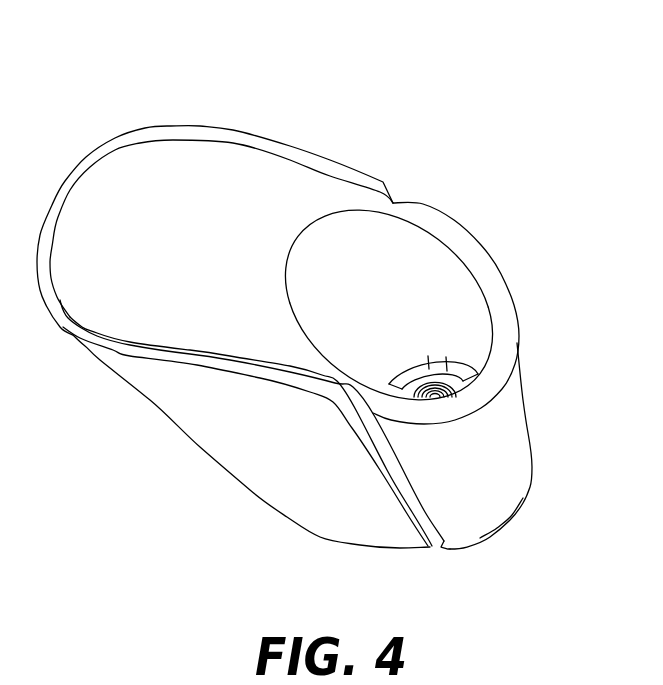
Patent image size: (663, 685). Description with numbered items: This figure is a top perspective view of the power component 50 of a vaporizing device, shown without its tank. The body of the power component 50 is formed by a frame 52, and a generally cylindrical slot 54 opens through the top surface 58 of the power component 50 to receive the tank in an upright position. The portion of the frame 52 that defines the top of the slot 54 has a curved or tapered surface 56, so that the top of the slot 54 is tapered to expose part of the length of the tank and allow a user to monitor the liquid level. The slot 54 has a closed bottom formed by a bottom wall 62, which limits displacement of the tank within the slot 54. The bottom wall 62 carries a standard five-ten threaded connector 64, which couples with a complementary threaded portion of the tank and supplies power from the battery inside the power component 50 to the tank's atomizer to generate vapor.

The power component 50 is at (146, 77).
The frame 52 is at (513, 460).
The slot 54 is at (378, 266).
The curved or tapered surface 56 is at (473, 263).
The top surface 58 is at (213, 168).
The bottom wall 62 is at (472, 338).
The threaded connector 64 is at (467, 377).